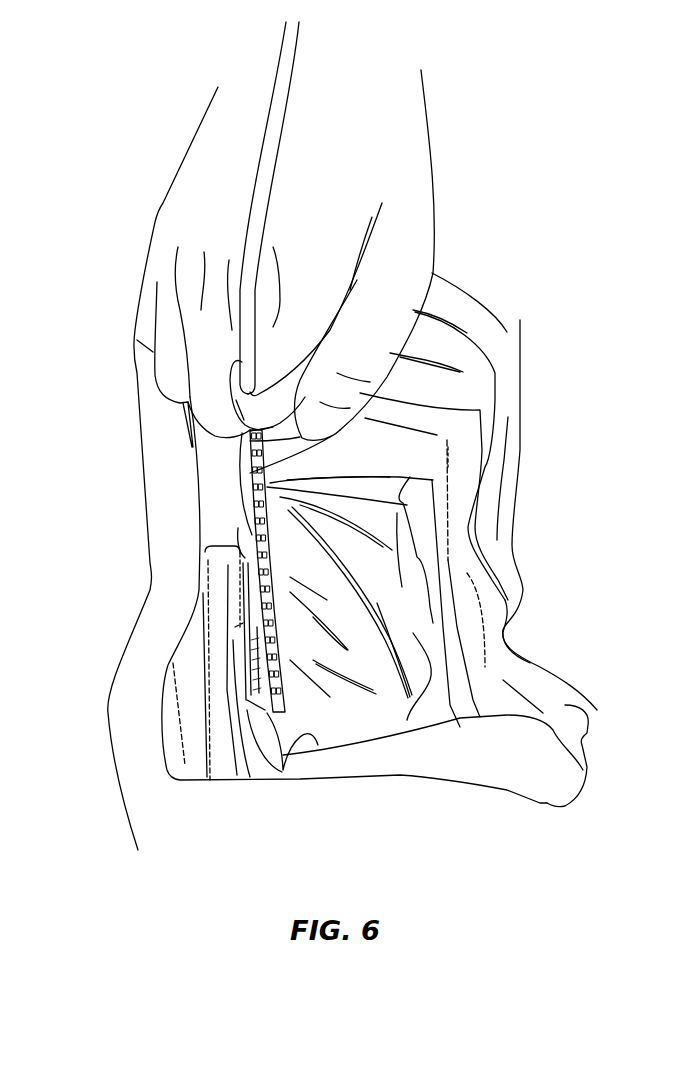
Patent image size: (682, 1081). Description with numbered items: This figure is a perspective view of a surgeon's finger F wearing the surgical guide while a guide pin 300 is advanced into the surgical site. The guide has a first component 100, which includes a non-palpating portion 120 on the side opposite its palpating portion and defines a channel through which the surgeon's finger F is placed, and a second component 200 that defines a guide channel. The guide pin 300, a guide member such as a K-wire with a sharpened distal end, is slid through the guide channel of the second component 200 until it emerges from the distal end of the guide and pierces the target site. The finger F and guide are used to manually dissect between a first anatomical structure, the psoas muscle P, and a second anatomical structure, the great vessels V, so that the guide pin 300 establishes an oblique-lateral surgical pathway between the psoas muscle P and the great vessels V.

The second component 200 is at (254, 202).
The first component 100 is at (283, 440).
The non-palpating portion 120 is at (240, 410).
The guide pin 300 is at (238, 554).
The surgeon's finger F is at (440, 475).
The psoas muscle P is at (293, 648).
The great vessels V is at (253, 675).